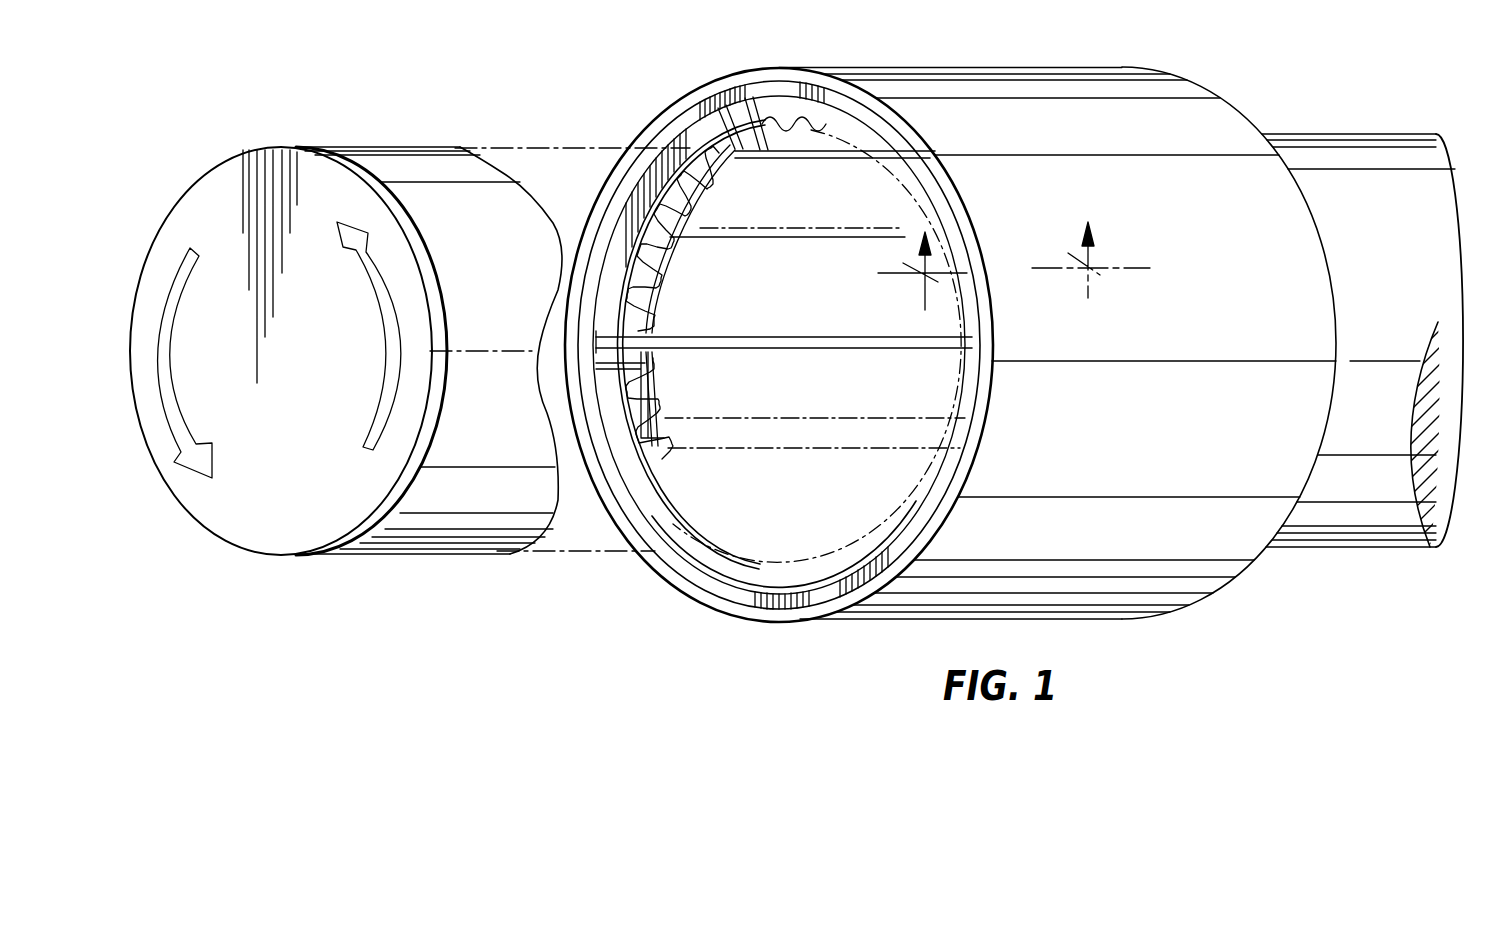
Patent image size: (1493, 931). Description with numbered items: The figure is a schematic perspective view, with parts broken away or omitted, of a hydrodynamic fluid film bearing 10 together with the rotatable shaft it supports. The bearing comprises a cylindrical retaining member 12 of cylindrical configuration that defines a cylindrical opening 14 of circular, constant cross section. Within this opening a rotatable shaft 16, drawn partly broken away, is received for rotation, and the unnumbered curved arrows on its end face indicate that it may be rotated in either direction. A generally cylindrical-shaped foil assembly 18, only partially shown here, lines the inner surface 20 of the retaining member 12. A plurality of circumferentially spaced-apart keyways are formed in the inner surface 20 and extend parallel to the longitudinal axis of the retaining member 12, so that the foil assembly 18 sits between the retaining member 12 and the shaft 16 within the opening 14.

The hydrodynamic fluid film bearing 10 is at (1090, 58).
The cylindrical retaining member 12 is at (1183, 539).
The cylindrical opening 14 is at (795, 396).
The rotatable shaft 16 is at (425, 176).
The foil assembly 18 is at (683, 245).
The inner surface 20 is at (770, 507).